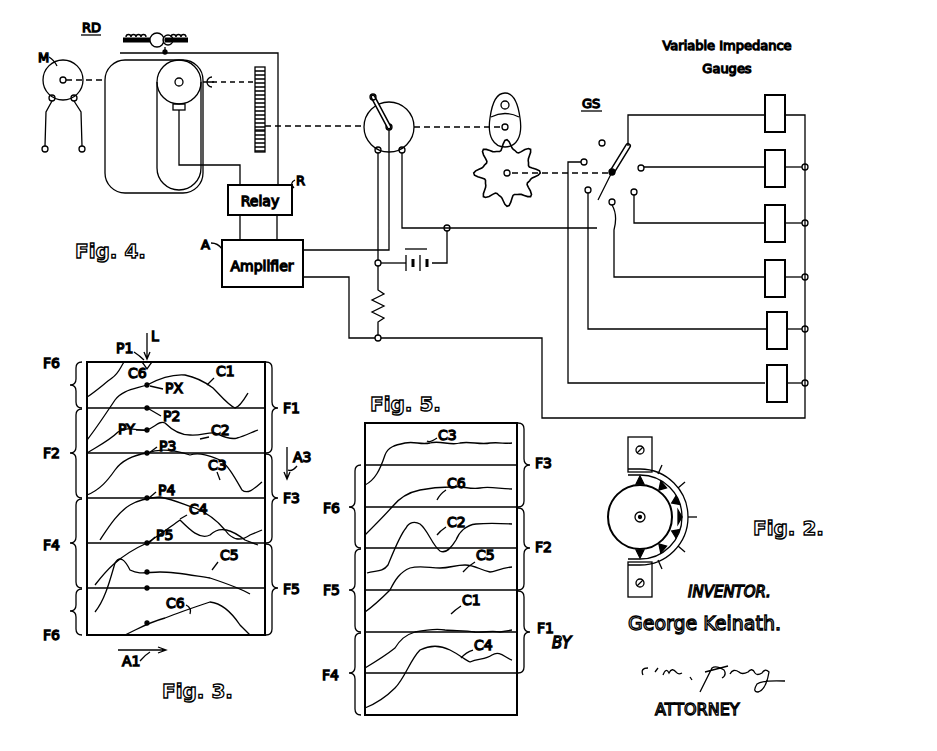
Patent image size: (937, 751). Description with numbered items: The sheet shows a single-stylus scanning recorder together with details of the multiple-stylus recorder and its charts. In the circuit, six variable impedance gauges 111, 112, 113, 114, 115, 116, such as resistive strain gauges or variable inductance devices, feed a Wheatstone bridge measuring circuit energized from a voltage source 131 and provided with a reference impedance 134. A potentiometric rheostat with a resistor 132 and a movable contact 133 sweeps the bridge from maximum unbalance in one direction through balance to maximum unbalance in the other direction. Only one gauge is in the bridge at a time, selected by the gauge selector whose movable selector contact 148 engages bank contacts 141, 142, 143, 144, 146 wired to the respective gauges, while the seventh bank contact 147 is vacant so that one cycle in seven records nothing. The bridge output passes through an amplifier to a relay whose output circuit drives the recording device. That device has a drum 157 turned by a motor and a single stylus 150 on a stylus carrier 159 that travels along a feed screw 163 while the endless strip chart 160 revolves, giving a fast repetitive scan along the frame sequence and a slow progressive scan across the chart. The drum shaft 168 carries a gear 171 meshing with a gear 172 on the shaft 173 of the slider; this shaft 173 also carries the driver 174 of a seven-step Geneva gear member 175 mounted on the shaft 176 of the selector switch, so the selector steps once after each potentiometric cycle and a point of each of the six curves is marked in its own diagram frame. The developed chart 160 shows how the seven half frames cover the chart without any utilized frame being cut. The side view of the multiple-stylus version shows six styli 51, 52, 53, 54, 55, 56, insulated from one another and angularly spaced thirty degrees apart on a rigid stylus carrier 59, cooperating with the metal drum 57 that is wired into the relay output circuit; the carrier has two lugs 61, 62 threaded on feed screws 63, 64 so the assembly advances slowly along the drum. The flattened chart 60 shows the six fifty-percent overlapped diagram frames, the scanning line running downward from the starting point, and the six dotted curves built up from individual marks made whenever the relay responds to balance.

In FIG. 3, the stylus 51 is at (151, 361).
In FIG. 2, the stylus 51 is at (673, 568).
In FIG. 2, the stylus 52 is at (694, 545).
In FIG. 2, the stylus 53 is at (701, 518).
In FIG. 2, the stylus 54 is at (694, 487).
In FIG. 2, the stylus 55 is at (673, 468).
In FIG. 2, the stylus 56 is at (628, 467).
In FIG. 2, the drum 57 is at (621, 527).
In FIG. 2, the stylus carrier 59 is at (689, 508).
In FIG. 3, the chart 60 is at (247, 367).
In FIG. 2, the lug 61 is at (628, 588).
In FIG. 2, the lug 62 is at (649, 443).
In FIG. 2, the feed screw 63 is at (636, 581).
In FIG. 2, the feed screw 64 is at (635, 450).
In FIG. 4, the gauge 111 is at (765, 101).
In FIG. 4, the gauge 112 is at (765, 156).
In FIG. 4, the gauge 113 is at (765, 209).
In FIG. 4, the gauge 114 is at (765, 267).
In FIG. 4, the gauge 115 is at (767, 319).
In FIG. 4, the gauge 116 is at (767, 373).
In FIG. 4, the voltage source 131 is at (420, 273).
In FIG. 4, the resistor 132 is at (413, 118).
In FIG. 4, the movable contact 133 is at (372, 99).
In FIG. 4, the reference impedance 134 is at (385, 311).
In FIG. 4, the bank contact 141 is at (629, 165).
In FIG. 4, the bank contact 142 is at (643, 171).
In FIG. 4, the bank contact 143 is at (637, 195).
In FIG. 4, the bank contact 144 is at (687, 238).
In FIG. 4, the bank contact 146 is at (583, 160).
In FIG. 4, the vacant bank contact 147 is at (603, 140).
In FIG. 4, the selector contact 148 is at (620, 161).
In FIG. 4, the stylus 150 is at (185, 115).
In FIG. 4, the drum 157 is at (161, 88).
In FIG. 4, the stylus carrier 159 is at (166, 35).
In FIG. 4, the endless strip chart 160 is at (112, 173).
In FIG. 5, the endless strip chart 160 is at (512, 698).
In FIG. 4, the feed screw 163 is at (134, 30).
In FIG. 4, the drum shaft 168 is at (243, 80).
In FIG. 4, the gear 171 is at (258, 91).
In FIG. 4, the gear 172 is at (258, 133).
In FIG. 4, the shaft 173 is at (301, 124).
In FIG. 4, the driver 174 is at (512, 105).
In FIG. 4, the Geneva gear member 175 is at (486, 156).
In FIG. 4, the shaft 176 is at (547, 170).